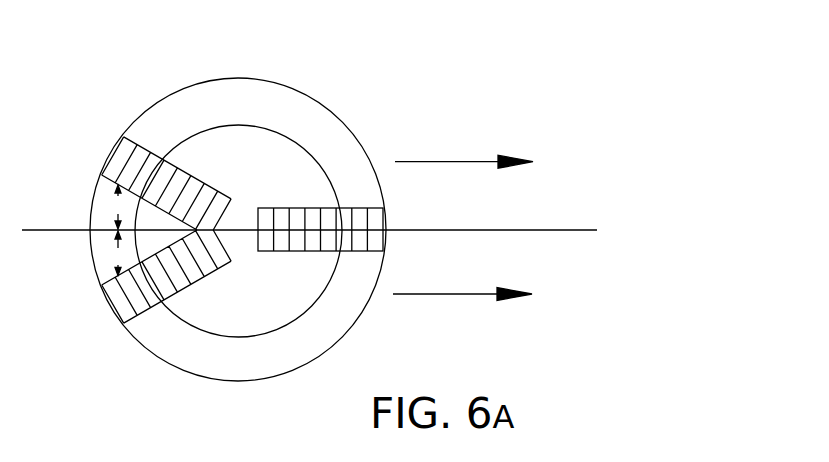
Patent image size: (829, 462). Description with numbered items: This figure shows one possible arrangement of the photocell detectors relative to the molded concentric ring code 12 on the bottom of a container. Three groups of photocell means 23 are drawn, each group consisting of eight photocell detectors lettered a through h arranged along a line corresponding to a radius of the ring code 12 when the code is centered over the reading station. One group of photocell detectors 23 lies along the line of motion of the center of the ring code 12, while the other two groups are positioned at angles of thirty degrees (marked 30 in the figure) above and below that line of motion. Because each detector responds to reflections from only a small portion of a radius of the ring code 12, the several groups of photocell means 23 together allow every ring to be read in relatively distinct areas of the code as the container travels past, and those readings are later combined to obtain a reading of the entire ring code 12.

The ring code 12 is at (181, 383).
The photocell means 23 is at (209, 141).
The 30 degree angular offset between detector arrays 30 is at (117, 230).